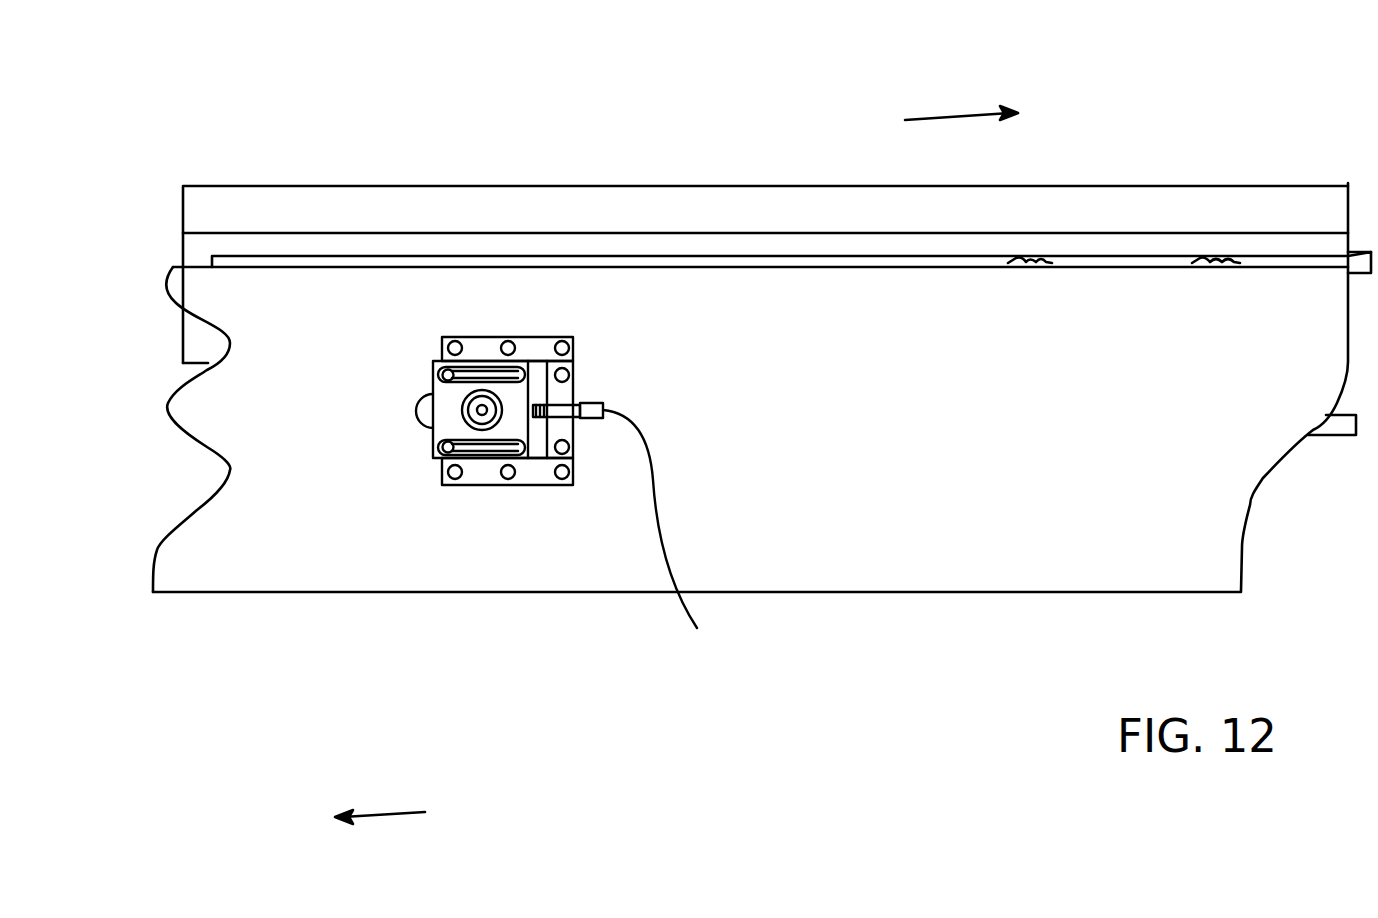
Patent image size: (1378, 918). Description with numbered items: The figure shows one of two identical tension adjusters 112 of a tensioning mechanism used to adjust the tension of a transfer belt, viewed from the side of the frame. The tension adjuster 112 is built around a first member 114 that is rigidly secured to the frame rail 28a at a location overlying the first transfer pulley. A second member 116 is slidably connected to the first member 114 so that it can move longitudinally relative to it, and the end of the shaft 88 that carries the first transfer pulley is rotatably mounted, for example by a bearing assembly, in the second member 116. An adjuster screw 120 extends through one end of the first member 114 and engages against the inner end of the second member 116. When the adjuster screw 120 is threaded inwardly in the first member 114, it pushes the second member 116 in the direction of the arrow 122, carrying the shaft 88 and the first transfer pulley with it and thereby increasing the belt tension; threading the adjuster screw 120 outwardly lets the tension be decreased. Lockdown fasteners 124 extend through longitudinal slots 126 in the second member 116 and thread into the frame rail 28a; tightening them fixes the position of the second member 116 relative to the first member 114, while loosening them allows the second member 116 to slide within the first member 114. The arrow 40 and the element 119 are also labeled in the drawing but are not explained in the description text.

The frame rail 28a is at (932, 568).
The direction of travel arrow 40 is at (953, 117).
The tension adjuster 112 is at (477, 406).
The first member 114 is at (543, 345).
The second member 116 is at (445, 402).
The side lug 119 is at (413, 418).
The adjuster screw 120 is at (649, 540).
The arrow 122 is at (387, 817).
The lockdown fastener 124 is at (438, 458).
The longitudinal slot 126 is at (478, 460).
The shaft 88 is at (484, 413).